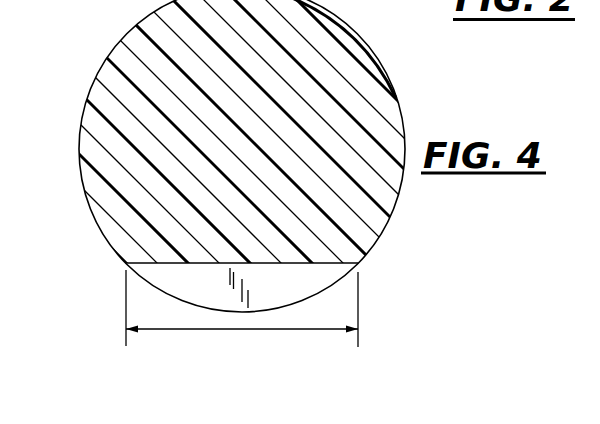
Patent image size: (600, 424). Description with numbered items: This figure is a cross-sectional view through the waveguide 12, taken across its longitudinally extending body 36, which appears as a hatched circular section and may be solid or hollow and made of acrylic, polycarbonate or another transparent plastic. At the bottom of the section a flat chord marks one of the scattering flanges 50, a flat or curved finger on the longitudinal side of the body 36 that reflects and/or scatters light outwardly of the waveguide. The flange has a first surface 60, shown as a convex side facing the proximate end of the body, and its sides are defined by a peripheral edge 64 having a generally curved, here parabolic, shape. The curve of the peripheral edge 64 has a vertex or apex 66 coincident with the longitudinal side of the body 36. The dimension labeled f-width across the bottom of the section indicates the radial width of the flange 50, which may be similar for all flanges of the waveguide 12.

The waveguide 12 is at (58, 199).
The body 36 is at (395, 98).
The scattering flange 50 is at (342, 280).
The first surface 60 is at (173, 287).
The peripheral edge 64 is at (287, 307).
The apex 66 is at (242, 312).